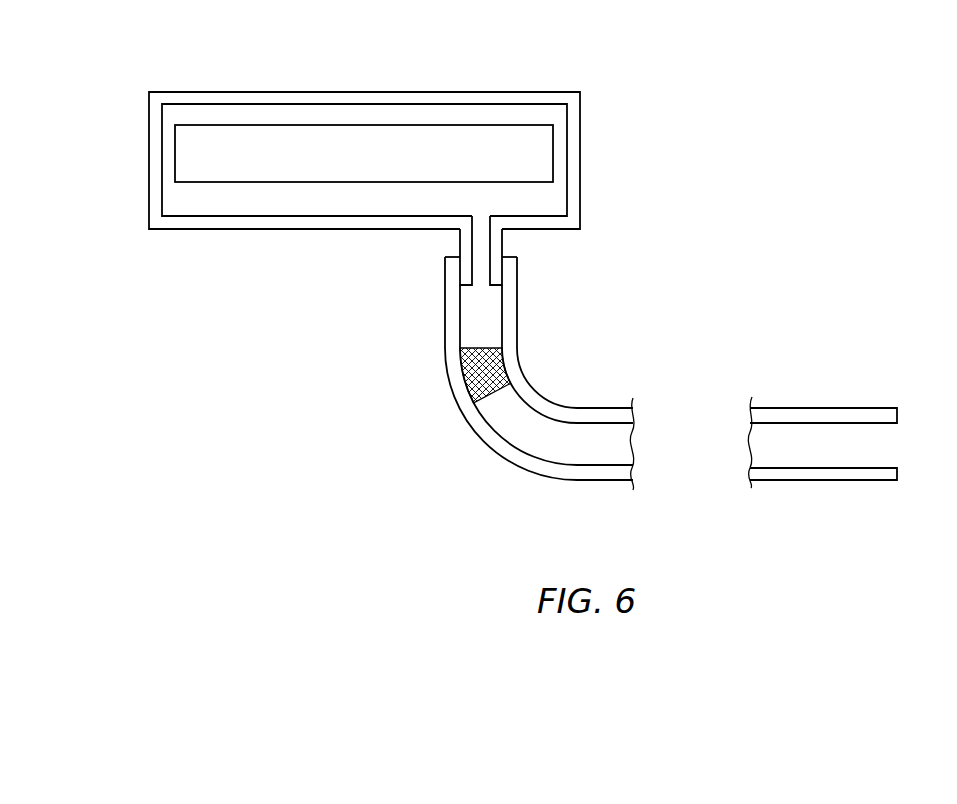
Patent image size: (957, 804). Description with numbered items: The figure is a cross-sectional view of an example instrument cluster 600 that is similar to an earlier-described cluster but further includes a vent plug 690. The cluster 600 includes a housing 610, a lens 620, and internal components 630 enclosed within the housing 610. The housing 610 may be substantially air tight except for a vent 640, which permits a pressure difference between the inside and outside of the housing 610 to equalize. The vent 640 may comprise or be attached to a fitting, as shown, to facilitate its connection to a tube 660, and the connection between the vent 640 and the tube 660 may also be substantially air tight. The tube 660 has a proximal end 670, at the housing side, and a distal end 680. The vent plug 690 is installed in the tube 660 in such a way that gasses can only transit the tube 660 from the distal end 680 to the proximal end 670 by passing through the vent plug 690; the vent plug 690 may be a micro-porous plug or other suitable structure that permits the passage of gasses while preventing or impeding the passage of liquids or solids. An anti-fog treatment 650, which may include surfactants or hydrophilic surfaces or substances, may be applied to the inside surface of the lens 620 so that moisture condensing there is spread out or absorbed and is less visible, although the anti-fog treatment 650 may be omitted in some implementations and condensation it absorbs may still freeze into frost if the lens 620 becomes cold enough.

The instrument cluster 600 is at (838, 186).
The housing 610 is at (403, 158).
The lens 620 is at (293, 92).
The internal components 630 is at (364, 153).
The vent 640 is at (482, 219).
The anti-fog treatment 650 is at (384, 109).
The tube 660 is at (498, 382).
The proximal end 670 is at (446, 257).
The distal end 680 is at (897, 481).
The vent plug 690 is at (477, 348).